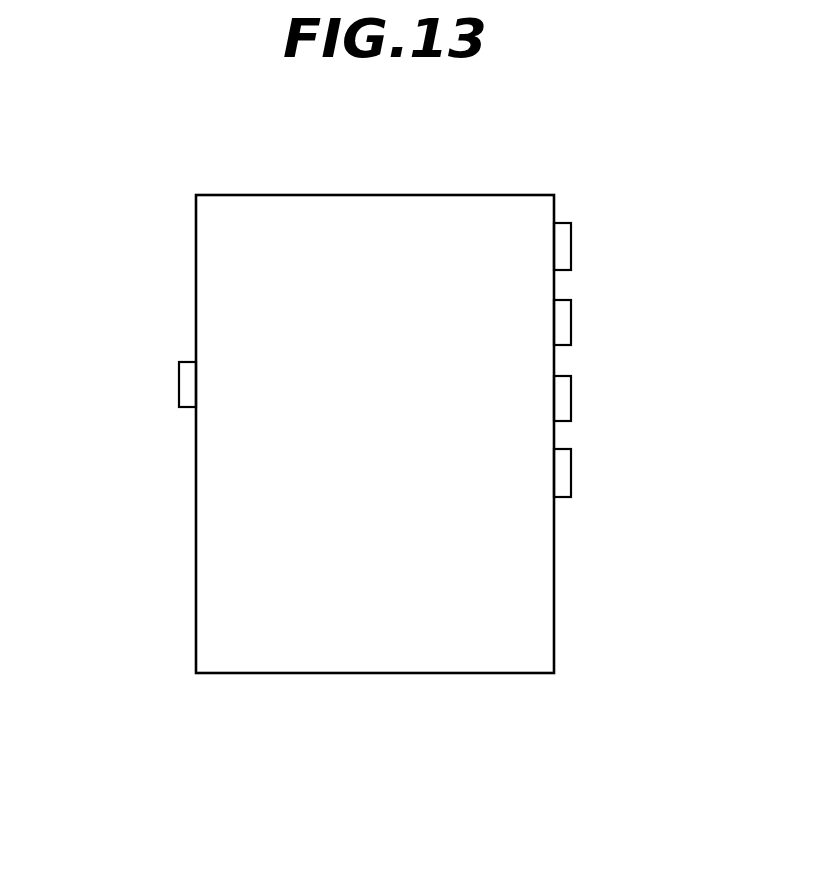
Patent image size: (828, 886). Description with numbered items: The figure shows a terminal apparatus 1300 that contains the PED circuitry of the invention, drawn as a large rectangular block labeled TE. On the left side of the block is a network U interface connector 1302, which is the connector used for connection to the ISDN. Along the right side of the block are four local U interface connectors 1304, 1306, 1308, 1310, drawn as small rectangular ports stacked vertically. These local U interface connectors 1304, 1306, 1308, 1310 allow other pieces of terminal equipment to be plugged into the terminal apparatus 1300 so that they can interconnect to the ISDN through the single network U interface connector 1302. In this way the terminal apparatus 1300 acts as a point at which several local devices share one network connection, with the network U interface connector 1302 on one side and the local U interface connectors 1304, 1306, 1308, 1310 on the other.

The terminal apparatus 1300 is at (304, 836).
The network U interface connector 1302 is at (180, 392).
The local U interface connector 1304 is at (571, 252).
The local U interface connector 1306 is at (571, 332).
The local U interface connector 1308 is at (571, 403).
The local U interface connector 1310 is at (571, 480).